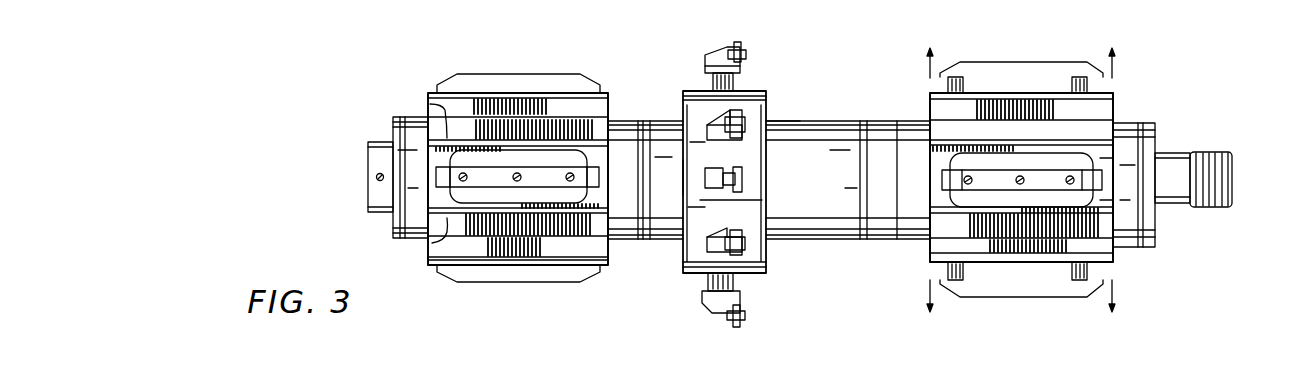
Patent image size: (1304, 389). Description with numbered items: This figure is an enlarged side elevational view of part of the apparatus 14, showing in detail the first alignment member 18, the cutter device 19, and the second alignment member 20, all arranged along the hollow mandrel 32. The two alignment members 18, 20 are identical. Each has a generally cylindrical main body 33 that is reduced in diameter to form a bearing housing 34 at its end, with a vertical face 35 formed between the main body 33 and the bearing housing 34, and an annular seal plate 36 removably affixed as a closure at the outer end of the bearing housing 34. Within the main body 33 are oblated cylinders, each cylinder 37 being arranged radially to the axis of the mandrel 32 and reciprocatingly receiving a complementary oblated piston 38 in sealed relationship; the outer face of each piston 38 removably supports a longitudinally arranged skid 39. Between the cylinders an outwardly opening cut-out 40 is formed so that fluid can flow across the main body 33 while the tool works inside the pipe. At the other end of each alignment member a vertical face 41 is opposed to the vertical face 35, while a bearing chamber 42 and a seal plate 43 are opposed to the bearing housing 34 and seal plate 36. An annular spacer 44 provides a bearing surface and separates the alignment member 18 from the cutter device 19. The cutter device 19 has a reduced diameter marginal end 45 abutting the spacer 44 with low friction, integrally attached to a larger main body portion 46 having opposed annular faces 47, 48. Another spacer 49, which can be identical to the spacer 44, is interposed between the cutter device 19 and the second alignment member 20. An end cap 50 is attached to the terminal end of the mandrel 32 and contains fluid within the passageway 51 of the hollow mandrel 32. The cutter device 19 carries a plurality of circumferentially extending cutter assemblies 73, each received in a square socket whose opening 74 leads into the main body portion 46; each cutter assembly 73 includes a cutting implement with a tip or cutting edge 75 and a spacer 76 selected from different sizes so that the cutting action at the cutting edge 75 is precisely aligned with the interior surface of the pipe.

The tool assembly 14 is at (337, 39).
The alignment member 18 is at (1119, 70).
The cutter device 19 is at (775, 82).
The alignment member 20 is at (386, 109).
The mandrel 32 is at (1172, 203).
The main body 33 is at (1105, 108).
The bearing housing 34 is at (616, 120).
The vertical face 35 is at (1116, 120).
The annular seal plate 36 is at (643, 118).
The cylinder 37 is at (995, 85).
The oblated piston 38 is at (1072, 93).
The skid 39 is at (515, 25).
The cut-out 40 is at (430, 104).
The vertical face 41 is at (925, 263).
The bearing chamber 42 is at (913, 243).
The seal plate 43 is at (895, 121).
The annular spacer 44 is at (867, 121).
The reduced diameter marginal end 45 is at (788, 121).
The main body portion 46 is at (757, 164).
The annular face 47 is at (768, 213).
The annular face 48 is at (683, 177).
The spacer 49 is at (663, 120).
The end cap 50 is at (377, 138).
The passageway 51 is at (1233, 178).
The cutter assembly 73 is at (729, 32).
The opening 74 is at (740, 90).
The cutting edge 75 is at (735, 326).
The spacer 76 is at (710, 87).